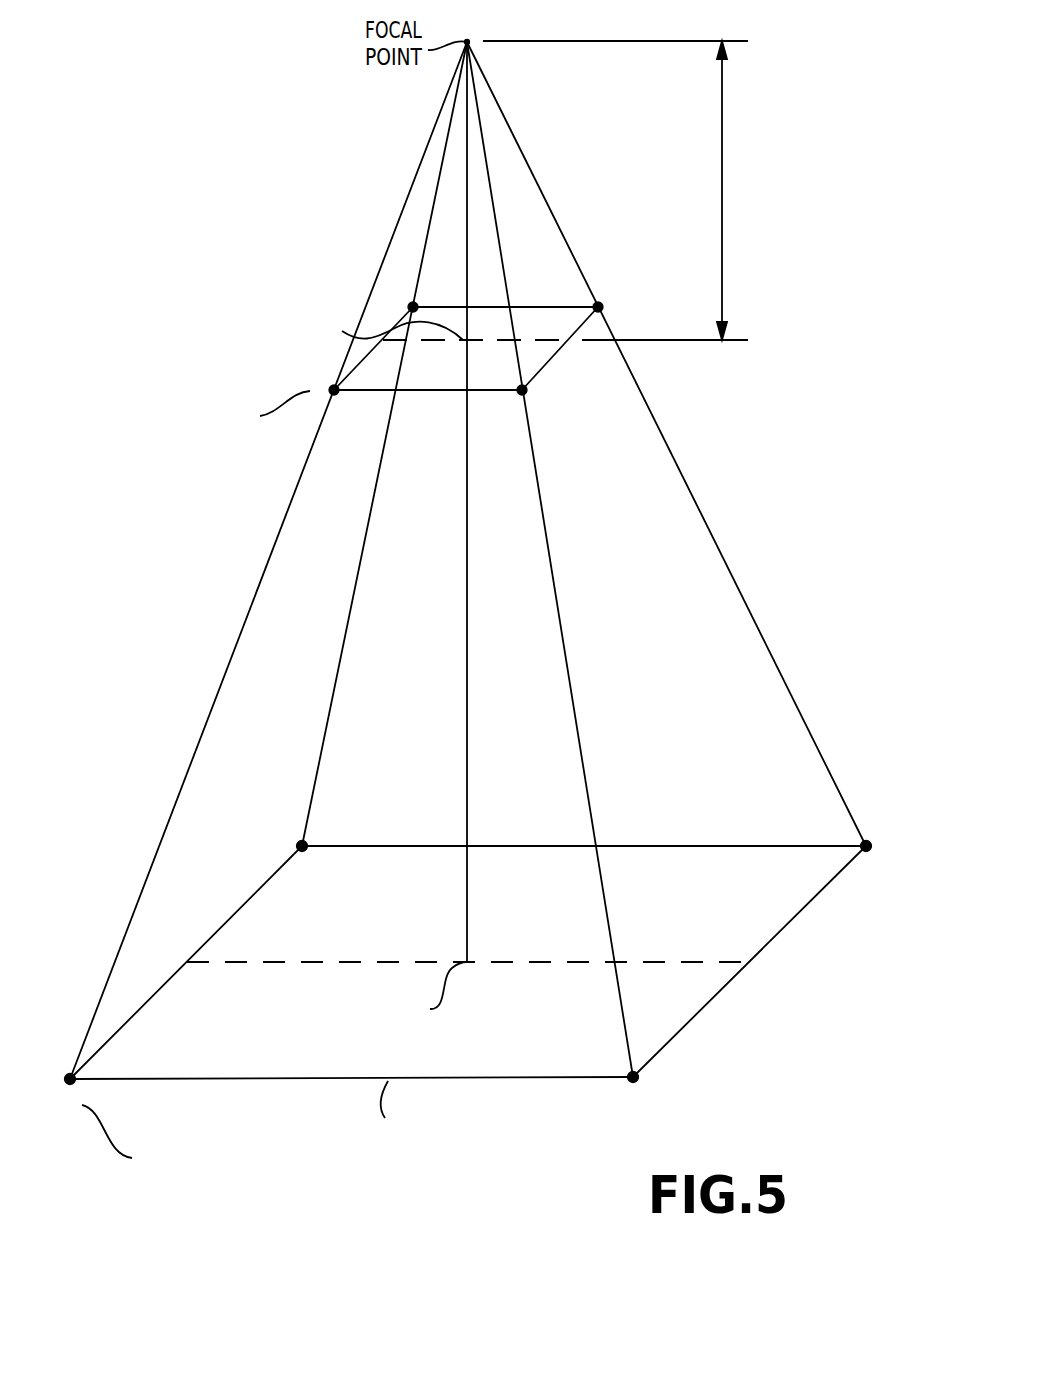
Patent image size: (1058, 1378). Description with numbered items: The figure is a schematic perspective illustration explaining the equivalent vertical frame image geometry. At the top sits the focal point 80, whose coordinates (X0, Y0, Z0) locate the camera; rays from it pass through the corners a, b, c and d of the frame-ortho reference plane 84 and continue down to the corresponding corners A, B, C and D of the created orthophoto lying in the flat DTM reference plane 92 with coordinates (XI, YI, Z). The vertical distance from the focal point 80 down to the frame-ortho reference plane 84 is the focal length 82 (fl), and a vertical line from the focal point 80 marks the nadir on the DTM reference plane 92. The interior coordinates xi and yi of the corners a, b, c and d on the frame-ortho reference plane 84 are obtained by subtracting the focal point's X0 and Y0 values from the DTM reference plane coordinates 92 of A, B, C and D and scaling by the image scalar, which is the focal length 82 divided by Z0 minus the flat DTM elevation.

The focal point 80 is at (469, 44).
The focal length 82 is at (722, 192).
The frame-ortho reference plane 84 is at (560, 355).
The DTM reference plane coordinates 92 is at (697, 1011).